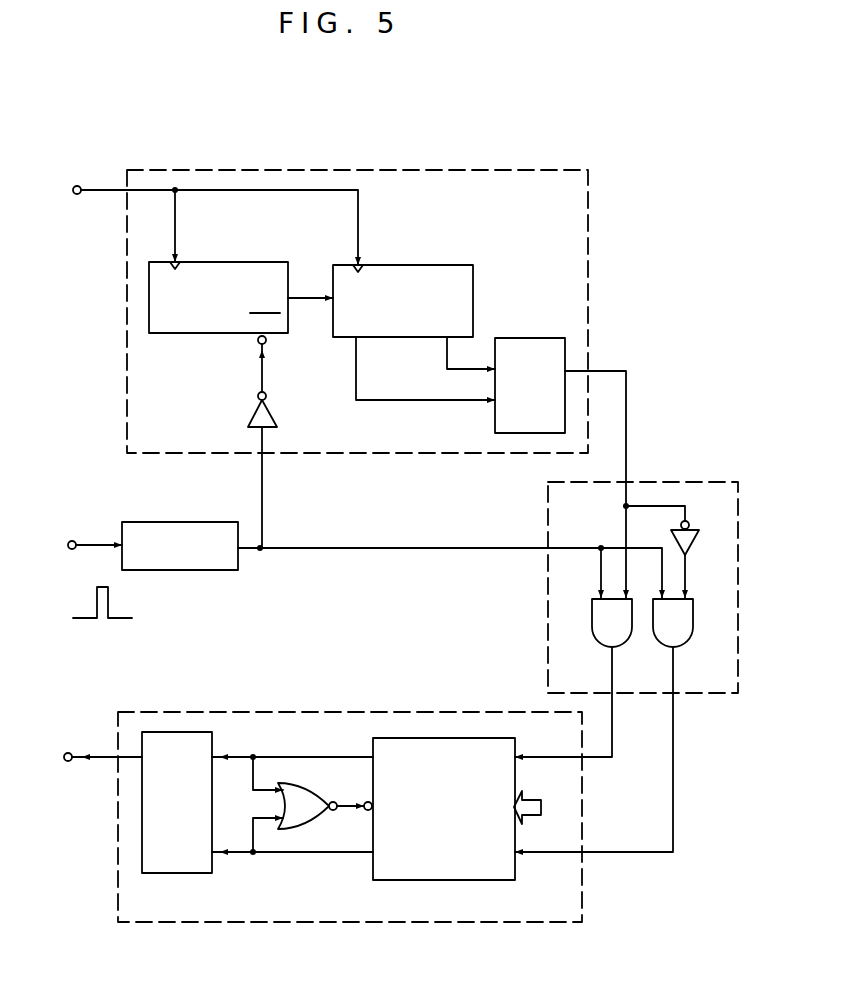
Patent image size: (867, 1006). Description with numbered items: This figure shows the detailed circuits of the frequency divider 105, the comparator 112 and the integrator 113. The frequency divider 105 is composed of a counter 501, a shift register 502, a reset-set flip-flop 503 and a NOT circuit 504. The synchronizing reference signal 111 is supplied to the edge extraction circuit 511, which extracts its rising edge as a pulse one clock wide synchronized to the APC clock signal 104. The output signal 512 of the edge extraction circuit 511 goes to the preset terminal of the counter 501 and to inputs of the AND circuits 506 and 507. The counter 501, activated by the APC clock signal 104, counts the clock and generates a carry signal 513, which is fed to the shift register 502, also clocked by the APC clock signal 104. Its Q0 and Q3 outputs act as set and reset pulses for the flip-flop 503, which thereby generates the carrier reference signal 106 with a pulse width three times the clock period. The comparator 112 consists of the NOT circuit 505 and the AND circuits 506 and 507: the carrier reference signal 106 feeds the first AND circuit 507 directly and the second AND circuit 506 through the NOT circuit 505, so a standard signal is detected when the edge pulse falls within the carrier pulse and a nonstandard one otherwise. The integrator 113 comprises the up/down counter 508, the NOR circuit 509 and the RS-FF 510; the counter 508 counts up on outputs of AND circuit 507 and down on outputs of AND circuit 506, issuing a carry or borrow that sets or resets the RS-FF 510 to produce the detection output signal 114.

The APC clock signal 104 is at (100, 192).
The frequency divider 105 is at (588, 198).
The carrier reference signal 106 is at (626, 424).
The synchronizing reference signal 111 is at (92, 540).
The comparator 112 is at (685, 482).
The integrator 113 is at (440, 712).
The detection output signal 114 is at (93, 760).
The counter 501 is at (175, 334).
The shift register 502 is at (437, 265).
The reset-set flip-flop 503 is at (530, 338).
The NOT circuit 504 is at (276, 414).
The NOT circuit 505 is at (692, 545).
The AND circuit 506 is at (690, 640).
The AND circuit 507 is at (595, 636).
The up/down counter 508 is at (447, 880).
The NOR circuit 509 is at (298, 830).
The RS-FF 510 is at (172, 873).
The edge extraction circuit 511 is at (175, 522).
The output signal of the edge extraction circuit 512 is at (380, 548).
The carry signal 513 is at (308, 296).